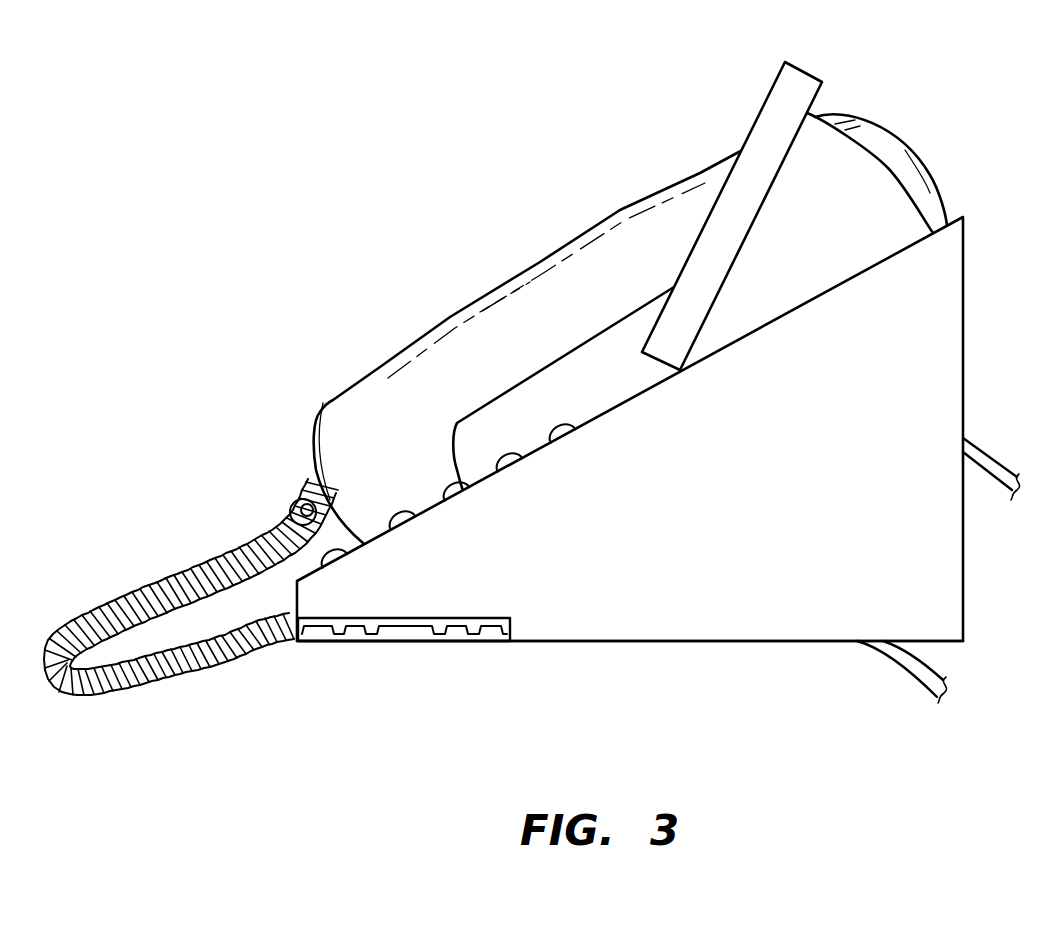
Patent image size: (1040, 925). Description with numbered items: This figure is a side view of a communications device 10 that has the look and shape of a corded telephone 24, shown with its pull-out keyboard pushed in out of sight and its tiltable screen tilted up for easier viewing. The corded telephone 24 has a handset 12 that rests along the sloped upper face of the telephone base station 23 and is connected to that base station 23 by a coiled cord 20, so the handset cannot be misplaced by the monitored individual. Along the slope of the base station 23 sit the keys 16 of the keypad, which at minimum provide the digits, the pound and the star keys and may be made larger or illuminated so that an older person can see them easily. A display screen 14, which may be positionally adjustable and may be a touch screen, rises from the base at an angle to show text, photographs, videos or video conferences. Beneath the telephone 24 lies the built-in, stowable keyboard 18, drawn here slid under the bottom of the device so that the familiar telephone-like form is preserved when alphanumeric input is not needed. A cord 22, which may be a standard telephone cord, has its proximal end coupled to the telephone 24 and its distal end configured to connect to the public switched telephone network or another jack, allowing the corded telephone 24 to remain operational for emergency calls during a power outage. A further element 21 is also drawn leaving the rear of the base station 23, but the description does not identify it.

The communications device 10 is at (535, 374).
The handset 12 is at (450, 318).
The display screen 14 is at (768, 110).
The keys 16 is at (553, 437).
The keyboard 18 is at (354, 643).
The cord 20 is at (185, 575).
The line cord 21 is at (995, 462).
The cord 22 is at (905, 668).
The base station 23 is at (585, 642).
The corded telephone 24 is at (676, 642).